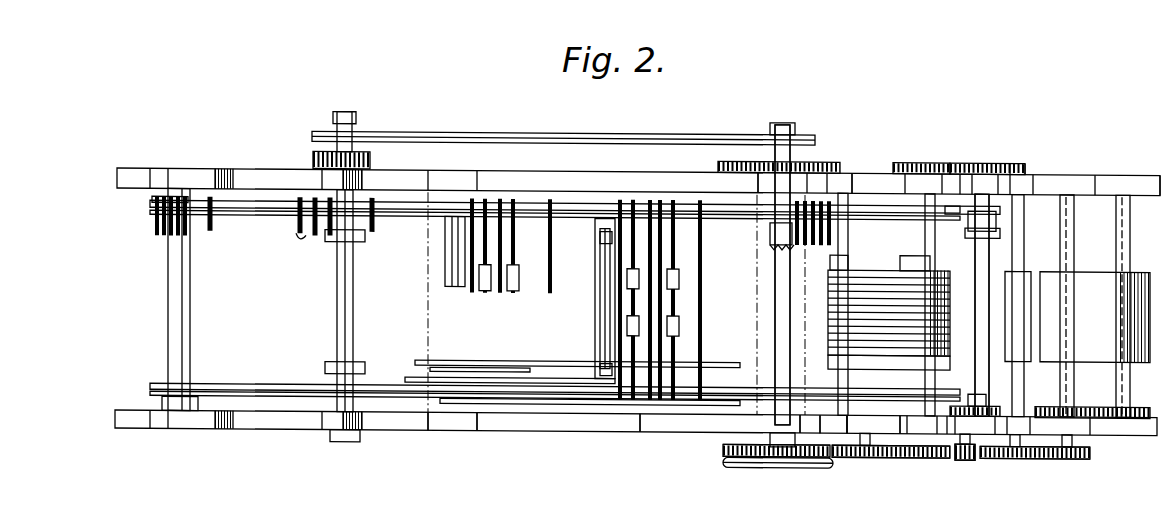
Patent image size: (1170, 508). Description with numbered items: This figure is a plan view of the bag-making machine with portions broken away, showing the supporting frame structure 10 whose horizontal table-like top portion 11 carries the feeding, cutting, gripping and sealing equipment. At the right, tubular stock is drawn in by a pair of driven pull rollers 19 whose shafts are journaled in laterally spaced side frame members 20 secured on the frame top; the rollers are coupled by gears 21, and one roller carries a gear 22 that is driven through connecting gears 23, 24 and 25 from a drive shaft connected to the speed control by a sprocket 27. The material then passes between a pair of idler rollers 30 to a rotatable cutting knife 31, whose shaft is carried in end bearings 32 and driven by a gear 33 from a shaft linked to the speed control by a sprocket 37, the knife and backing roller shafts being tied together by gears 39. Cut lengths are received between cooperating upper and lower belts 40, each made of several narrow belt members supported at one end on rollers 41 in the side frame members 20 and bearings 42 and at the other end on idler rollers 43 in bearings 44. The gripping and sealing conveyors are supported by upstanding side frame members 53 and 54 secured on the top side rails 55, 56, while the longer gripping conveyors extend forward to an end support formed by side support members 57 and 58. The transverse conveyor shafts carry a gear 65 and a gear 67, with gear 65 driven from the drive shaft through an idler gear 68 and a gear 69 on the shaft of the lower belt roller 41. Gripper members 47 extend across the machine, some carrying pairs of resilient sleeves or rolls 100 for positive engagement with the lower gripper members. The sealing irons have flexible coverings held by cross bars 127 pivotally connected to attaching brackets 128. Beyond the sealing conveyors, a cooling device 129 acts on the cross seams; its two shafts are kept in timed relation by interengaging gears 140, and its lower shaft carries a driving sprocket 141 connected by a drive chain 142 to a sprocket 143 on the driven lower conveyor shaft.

The supporting frame structure 10 is at (480, 431).
The top portion 11 is at (652, 431).
The pull rollers 19 is at (1085, 273).
The side frame members 20 is at (1080, 173).
The gears 21 is at (1099, 400).
The gear 22 is at (1082, 454).
The connecting gear 23 is at (1030, 454).
The connecting gear 24 is at (995, 454).
The connecting gear 25 is at (960, 455).
The sprocket 27 is at (1000, 225).
The idler rollers 30 is at (1031, 303).
The rotatable cutting knife 31 is at (915, 157).
The end bearings 32 is at (980, 168).
The gear 33 is at (1013, 158).
The sprocket 37 is at (962, 213).
The gears 39 is at (960, 400).
The upper and lower belts 40 is at (881, 299).
The rollers 41 is at (910, 264).
The bearings 42 is at (905, 184).
The idler rollers 43 is at (843, 264).
The bearings 44 is at (840, 176).
The gripper members 47 is at (155, 232).
The side frame member 53 is at (600, 431).
The side frame member 54 is at (640, 178).
The top side rail 55 is at (280, 430).
The top side rail 56 is at (267, 178).
The side support member 57 is at (190, 430).
The side support member 58 is at (185, 178).
The gear 65 is at (723, 455).
The gear 67 is at (812, 157).
The idler gear 68 is at (852, 454).
The gear 69 is at (905, 454).
The sleeves or rolls 100 is at (678, 322).
The cross bars 127 is at (600, 306).
The attaching brackets 128 is at (605, 232).
The cooling device 129 is at (337, 306).
The interengaging gears 140 is at (370, 156).
The driving sprocket 141 is at (335, 117).
The drive chain 142 is at (430, 130).
The sprocket 143 is at (795, 128).